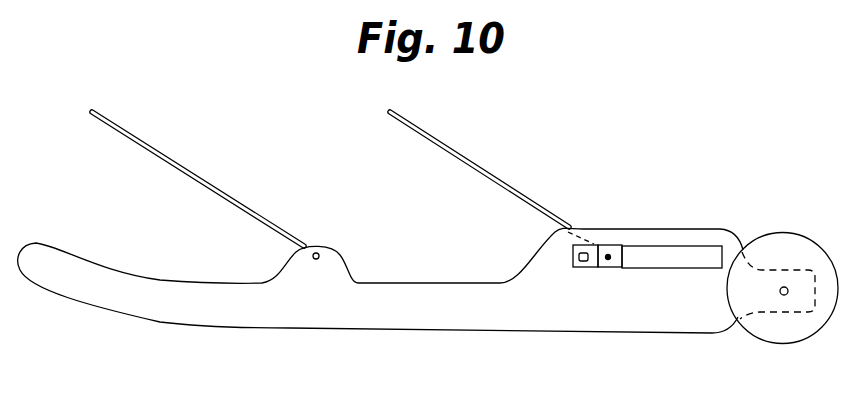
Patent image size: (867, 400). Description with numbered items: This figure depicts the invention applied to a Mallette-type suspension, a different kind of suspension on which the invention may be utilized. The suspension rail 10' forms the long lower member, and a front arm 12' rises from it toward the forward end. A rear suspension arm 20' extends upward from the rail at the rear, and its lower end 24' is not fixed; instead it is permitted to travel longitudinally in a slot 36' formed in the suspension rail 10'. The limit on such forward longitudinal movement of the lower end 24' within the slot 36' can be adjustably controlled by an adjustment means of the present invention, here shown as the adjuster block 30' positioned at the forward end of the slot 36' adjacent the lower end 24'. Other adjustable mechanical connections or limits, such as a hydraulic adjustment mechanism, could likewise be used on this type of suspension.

The suspension rail 10' is at (428, 300).
The first arm 12' is at (198, 179).
The rear suspension arm 20' is at (492, 175).
The lower end 24' is at (632, 218).
The adjuster block 30' is at (573, 318).
The slot 36' is at (672, 212).